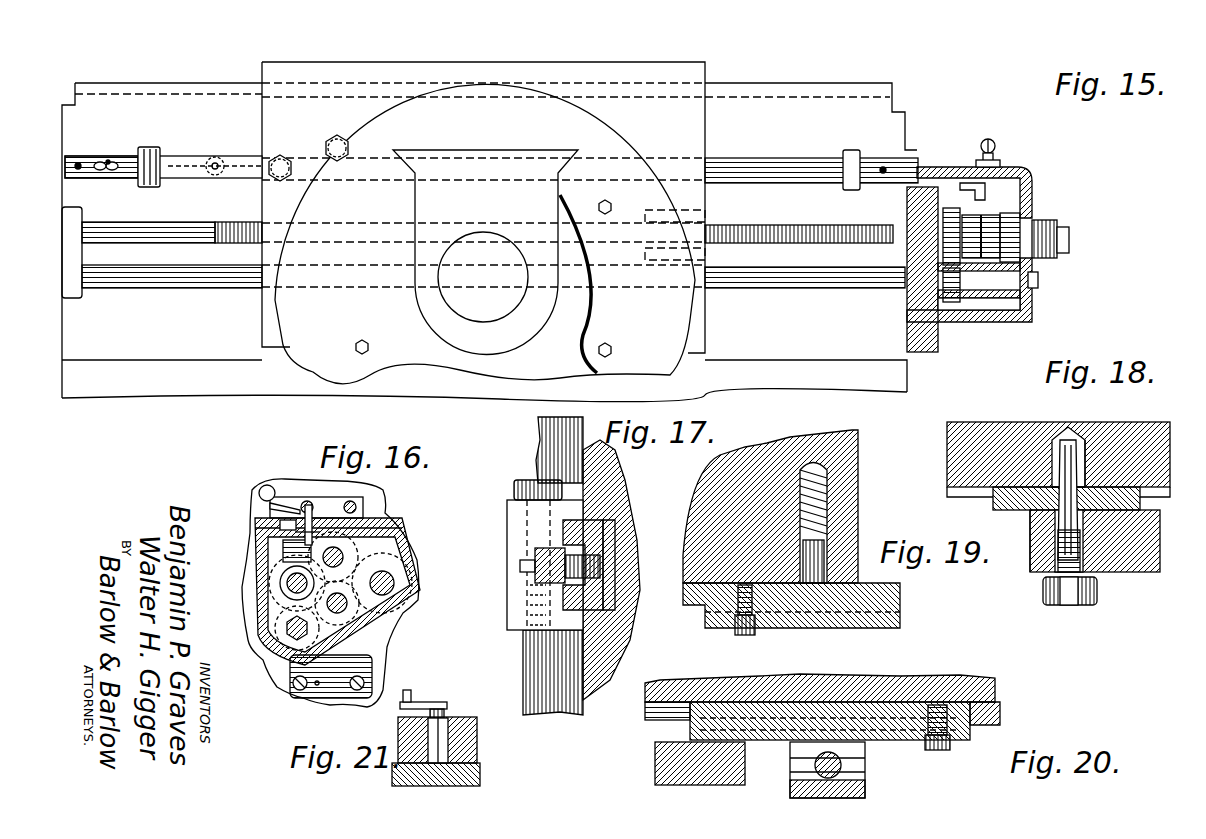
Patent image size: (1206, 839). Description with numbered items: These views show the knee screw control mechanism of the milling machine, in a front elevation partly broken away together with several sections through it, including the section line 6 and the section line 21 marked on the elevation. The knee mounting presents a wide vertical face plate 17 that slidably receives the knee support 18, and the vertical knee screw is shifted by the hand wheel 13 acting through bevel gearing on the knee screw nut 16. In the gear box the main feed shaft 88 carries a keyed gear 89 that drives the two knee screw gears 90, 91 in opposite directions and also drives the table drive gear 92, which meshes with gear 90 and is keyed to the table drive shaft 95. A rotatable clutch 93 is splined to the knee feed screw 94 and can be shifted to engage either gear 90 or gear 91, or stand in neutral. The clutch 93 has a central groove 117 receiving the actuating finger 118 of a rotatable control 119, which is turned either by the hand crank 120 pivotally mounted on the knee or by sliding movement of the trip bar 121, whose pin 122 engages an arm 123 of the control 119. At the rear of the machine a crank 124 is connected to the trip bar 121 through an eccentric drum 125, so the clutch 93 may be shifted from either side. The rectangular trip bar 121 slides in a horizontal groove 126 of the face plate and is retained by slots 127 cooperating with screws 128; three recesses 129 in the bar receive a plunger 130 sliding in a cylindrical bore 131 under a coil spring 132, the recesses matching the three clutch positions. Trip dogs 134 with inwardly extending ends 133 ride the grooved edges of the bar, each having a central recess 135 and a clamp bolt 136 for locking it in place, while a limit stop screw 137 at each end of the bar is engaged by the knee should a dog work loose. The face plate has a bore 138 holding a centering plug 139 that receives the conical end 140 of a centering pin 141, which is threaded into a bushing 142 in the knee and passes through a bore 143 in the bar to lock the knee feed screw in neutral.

In FIG. 15, the nut 6 is at (337, 195).
In FIG. 18, the hand wheel 13 is at (1085, 462).
In FIG. 15, the knee screw nut 16 is at (990, 139).
In FIG. 15, the vertical face plate 17 is at (884, 160).
In FIG. 18, the vertical face plate 17 is at (1150, 560).
In FIG. 15, the knee support 18 is at (280, 195).
In FIG. 15, the dowel 21 is at (215, 166).
In FIG. 16, the main feed shaft 88 is at (395, 590).
In FIG. 16, the gear 89 is at (400, 572).
In FIG. 15, the knee screw gear 90 is at (950, 208).
In FIG. 16, the knee screw gear 90 is at (280, 590).
In FIG. 15, the knee screw gear 91 is at (1037, 200).
In FIG. 15, the table drive gear 92 is at (950, 302).
In FIG. 16, the table drive gear 92 is at (275, 650).
In FIG. 15, the clutch 93 is at (1062, 215).
In FIG. 15, the knee feed screw 94 is at (820, 245).
In FIG. 15, the table drive shaft 95 is at (765, 273).
In FIG. 15, the central groove 117 is at (979, 301).
In FIG. 15, the actuating finger 118 is at (992, 213).
In FIG. 16, the actuating finger 118 is at (270, 565).
In FIG. 15, the rotatable control 119 is at (968, 193).
In FIG. 16, the rotatable control 119 is at (300, 535).
In FIG. 15, the hand crank 120 is at (992, 142).
In FIG. 16, the hand crank 120 is at (272, 485).
In FIG. 15, the trip bar 121 is at (790, 165).
In FIG. 17, the trip bar 121 is at (585, 552).
In FIG. 18, the trip bar 121 is at (1145, 515).
In FIG. 21, the trip bar 121 is at (482, 780).
In FIG. 16, the pin 122 is at (265, 500).
In FIG. 16, the arm 123 is at (275, 522).
In FIG. 21, the crank 124 is at (433, 700).
In FIG. 21, the eccentric drum 125 is at (440, 735).
In FIG. 15, the horizontal groove 126 is at (82, 160).
In FIG. 17, the horizontal groove 126 is at (615, 640).
In FIG. 15, the slots 127 is at (108, 156).
In FIG. 15, the screws 128 is at (112, 158).
In FIG. 19, the recesses 129 is at (845, 590).
In FIG. 19, the plunger 130 is at (860, 540).
In FIG. 19, the cylindrical bore 131 is at (860, 495).
In FIG. 19, the coil spring 132 is at (862, 462).
In FIG. 17, the inwardly extending ends 133 is at (575, 465).
In FIG. 15, the trip dog 134 is at (152, 148).
In FIG. 17, the trip dog 134 is at (518, 595).
In FIG. 17, the central recess 135 is at (535, 560).
In FIG. 17, the clamp bolt 136 is at (520, 495).
In FIG. 15, the limit stop screw 137 is at (108, 160).
In FIG. 17, the limit stop screw 137 is at (592, 560).
In FIG. 20, the limit stop screw 137 is at (935, 750).
In FIG. 18, the bore 138 is at (1042, 445).
In FIG. 18, the centering plug 139 is at (1095, 455).
In FIG. 18, the conical end 140 is at (1072, 470).
In FIG. 18, the centering pin 141 is at (1070, 602).
In FIG. 18, the threaded bushing 142 is at (1115, 570).
In FIG. 18, the bore 143 is at (1040, 515).